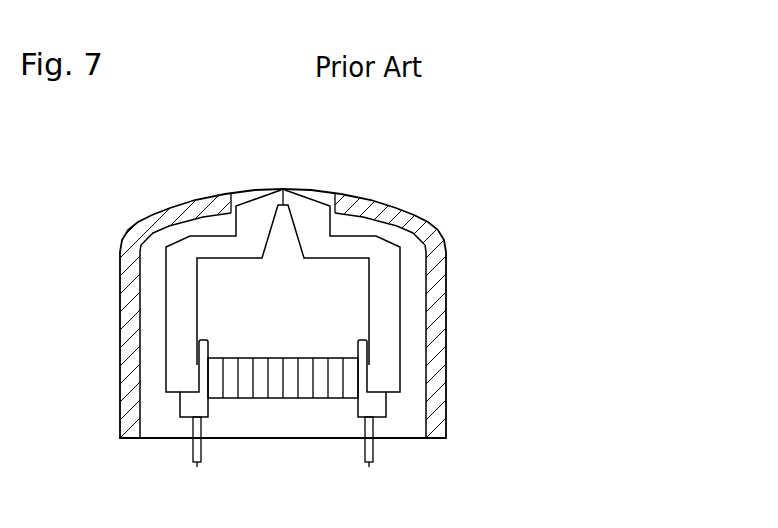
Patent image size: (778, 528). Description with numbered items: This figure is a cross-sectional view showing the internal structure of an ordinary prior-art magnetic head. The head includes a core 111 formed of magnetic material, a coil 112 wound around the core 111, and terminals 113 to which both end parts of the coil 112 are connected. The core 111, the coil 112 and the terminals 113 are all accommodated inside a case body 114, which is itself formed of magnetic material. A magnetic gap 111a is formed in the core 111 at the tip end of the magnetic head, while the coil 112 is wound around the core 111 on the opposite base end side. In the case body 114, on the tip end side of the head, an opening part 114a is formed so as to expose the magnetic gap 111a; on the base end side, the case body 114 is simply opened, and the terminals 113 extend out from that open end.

The core 111 is at (197, 307).
The magnetic gap 111a is at (283, 190).
The coil 112 is at (273, 398).
The terminals 113 is at (197, 463).
The case body 114 is at (447, 312).
The opening part 114a is at (243, 191).